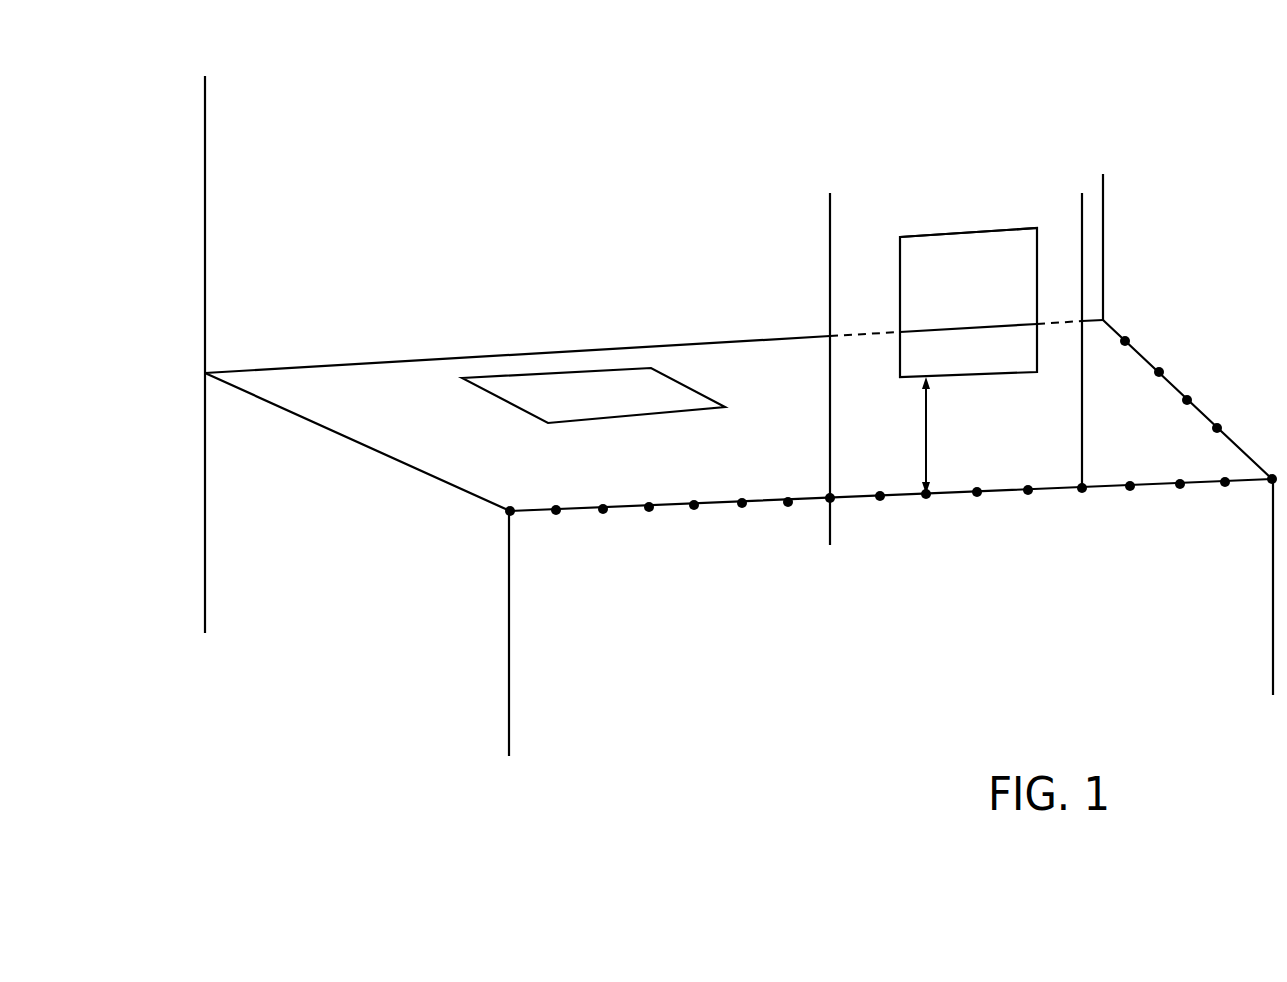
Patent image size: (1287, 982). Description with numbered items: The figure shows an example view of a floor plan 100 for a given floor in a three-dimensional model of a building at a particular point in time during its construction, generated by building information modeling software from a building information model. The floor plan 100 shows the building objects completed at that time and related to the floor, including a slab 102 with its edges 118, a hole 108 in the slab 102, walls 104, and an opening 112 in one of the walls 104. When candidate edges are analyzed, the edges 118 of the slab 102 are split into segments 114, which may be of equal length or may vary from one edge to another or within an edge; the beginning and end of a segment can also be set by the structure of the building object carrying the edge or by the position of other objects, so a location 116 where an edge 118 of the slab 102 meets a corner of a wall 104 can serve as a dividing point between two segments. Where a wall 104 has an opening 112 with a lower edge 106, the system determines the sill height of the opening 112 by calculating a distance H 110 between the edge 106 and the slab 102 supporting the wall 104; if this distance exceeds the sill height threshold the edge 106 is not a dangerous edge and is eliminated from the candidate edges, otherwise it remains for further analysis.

The floor plan 100 is at (386, 114).
The slab 102 is at (467, 462).
The wall 104 is at (204, 228).
The lower edge of the opening 106 is at (1000, 378).
The hole in the slab 108 is at (668, 390).
The distance H 110 is at (926, 438).
The opening in the wall 112 is at (978, 260).
The segments 114 is at (788, 504).
The location 116 is at (832, 510).
The edge 118 is at (573, 511).